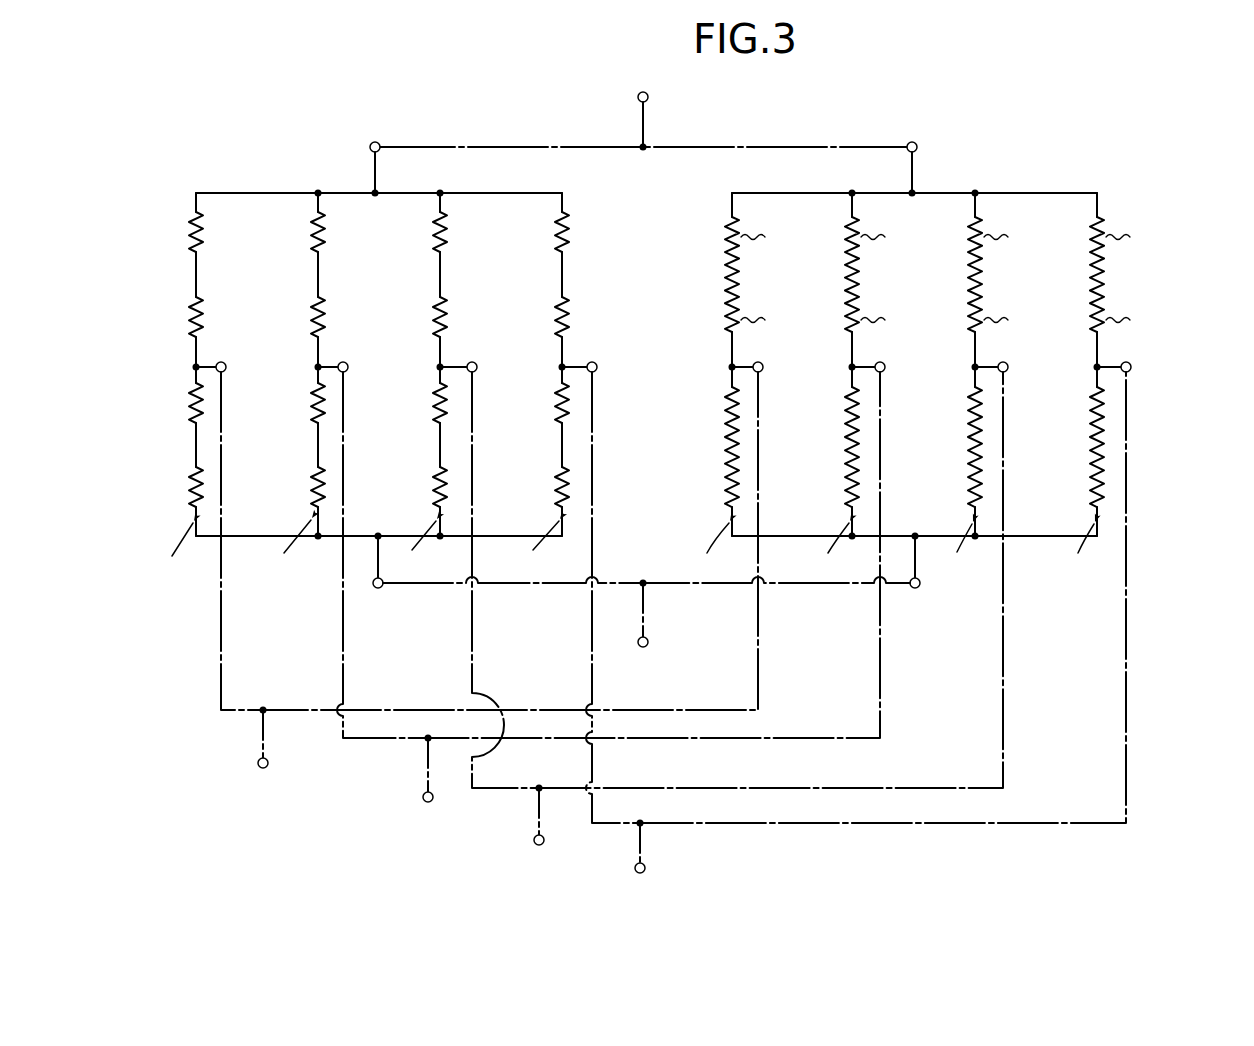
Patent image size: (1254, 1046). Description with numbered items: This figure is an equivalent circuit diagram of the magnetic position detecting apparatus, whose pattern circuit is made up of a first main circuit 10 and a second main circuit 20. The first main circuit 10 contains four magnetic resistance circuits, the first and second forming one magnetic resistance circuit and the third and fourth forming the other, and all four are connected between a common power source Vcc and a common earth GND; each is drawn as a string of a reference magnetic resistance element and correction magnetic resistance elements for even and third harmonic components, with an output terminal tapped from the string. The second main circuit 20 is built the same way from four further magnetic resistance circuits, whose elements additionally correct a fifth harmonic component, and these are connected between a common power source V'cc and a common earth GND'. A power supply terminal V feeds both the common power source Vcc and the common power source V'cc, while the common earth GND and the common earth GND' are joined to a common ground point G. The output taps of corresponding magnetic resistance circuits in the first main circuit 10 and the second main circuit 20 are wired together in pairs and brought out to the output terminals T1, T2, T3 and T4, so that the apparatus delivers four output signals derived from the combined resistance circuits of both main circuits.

The first main circuit 10 is at (194, 191).
The second main circuit 20 is at (1087, 191).
The power supply terminal V is at (642, 107).
The common power source Vcc is at (382, 153).
The common power source V'cc is at (919, 154).
The common earth GND is at (385, 573).
The common earth GND' is at (926, 573).
The common ground terminal G is at (642, 626).
The output terminal T1 is at (262, 751).
The output terminal T2 is at (427, 782).
The output terminal T3 is at (538, 828).
The output terminal T4 is at (639, 859).